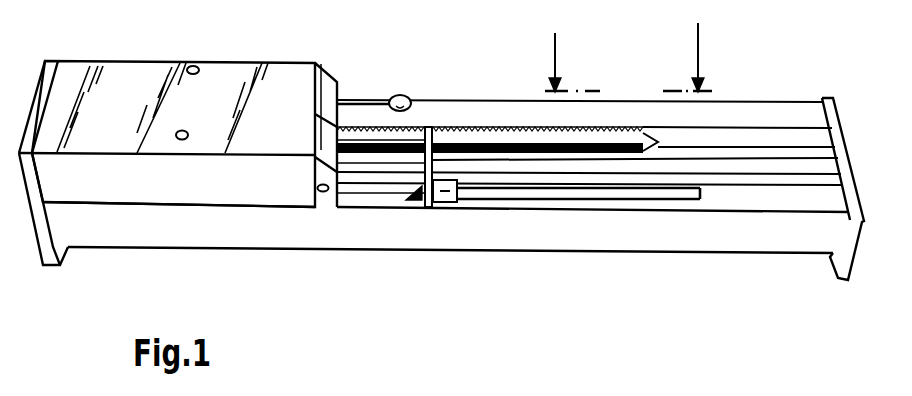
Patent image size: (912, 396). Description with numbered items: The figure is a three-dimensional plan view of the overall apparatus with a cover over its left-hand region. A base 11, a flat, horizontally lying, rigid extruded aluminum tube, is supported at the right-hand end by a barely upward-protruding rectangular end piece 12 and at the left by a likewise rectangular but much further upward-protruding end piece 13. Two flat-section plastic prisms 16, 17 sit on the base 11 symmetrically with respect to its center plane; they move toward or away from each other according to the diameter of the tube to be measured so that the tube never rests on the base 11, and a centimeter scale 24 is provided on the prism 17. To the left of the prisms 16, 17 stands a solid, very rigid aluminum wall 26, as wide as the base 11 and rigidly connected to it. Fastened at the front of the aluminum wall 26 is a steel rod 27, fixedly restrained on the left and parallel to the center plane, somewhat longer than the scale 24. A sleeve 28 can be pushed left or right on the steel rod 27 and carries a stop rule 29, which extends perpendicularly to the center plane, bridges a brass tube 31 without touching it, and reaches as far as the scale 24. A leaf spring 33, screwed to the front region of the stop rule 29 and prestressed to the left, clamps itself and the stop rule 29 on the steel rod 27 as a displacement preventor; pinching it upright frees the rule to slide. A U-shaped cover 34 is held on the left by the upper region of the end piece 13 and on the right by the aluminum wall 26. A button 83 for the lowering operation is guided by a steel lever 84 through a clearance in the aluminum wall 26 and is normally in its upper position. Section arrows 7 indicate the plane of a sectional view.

The section line VII-VII 7 is at (632, 57).
The base 11 is at (732, 241).
The end piece 12 is at (845, 268).
The end piece 13 is at (50, 257).
The prism 16 is at (785, 166).
The prism 17 is at (770, 137).
The centimeter scale 24 is at (607, 127).
The aluminum wall 26 is at (327, 200).
The steel rod 27 is at (617, 200).
The sleeve 28 is at (452, 203).
The stop rule 29 is at (443, 127).
The brass tube 31 is at (497, 138).
The leaf spring 33 is at (420, 195).
The cover 34 is at (245, 75).
The button 83 is at (398, 95).
The steel lever 84 is at (358, 100).